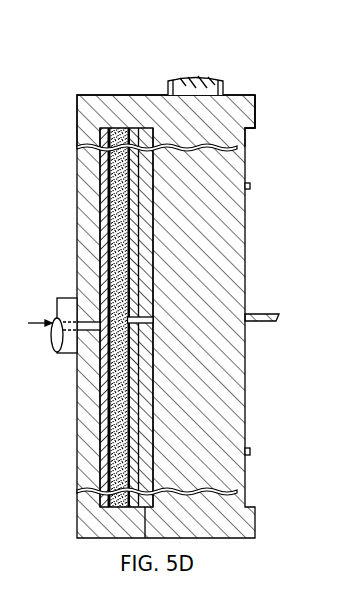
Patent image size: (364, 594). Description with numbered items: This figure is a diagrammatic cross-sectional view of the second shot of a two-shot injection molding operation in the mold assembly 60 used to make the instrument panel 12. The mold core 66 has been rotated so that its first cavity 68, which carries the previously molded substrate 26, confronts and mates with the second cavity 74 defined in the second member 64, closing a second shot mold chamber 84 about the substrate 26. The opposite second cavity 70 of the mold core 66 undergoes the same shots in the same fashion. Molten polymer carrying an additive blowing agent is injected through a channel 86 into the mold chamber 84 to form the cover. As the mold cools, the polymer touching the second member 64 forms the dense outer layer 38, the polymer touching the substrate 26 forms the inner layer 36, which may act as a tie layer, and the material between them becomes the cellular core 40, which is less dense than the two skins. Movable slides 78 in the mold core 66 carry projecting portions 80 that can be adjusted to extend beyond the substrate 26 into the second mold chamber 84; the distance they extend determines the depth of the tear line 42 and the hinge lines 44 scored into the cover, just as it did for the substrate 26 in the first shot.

The mold assembly 60 is at (239, 56).
The second member 64 is at (99, 95).
The instrument panel 12 is at (122, 129).
The mold core 66 is at (242, 95).
The second shot mold chamber 84 is at (107, 173).
The outer layer 38 is at (103, 208).
The core 40 is at (108, 232).
The hinge lines 44 is at (148, 180).
The substrate 26 is at (145, 203).
The inner layer 36 is at (135, 240).
The projecting portion 80 is at (251, 186).
The second cavity 70 is at (246, 286).
The channel 86 is at (75, 300).
The tear line 42 is at (154, 323).
The movable slides 78 is at (264, 322).
The first cavity 68 is at (147, 383).
The second cavity 74 is at (104, 420).